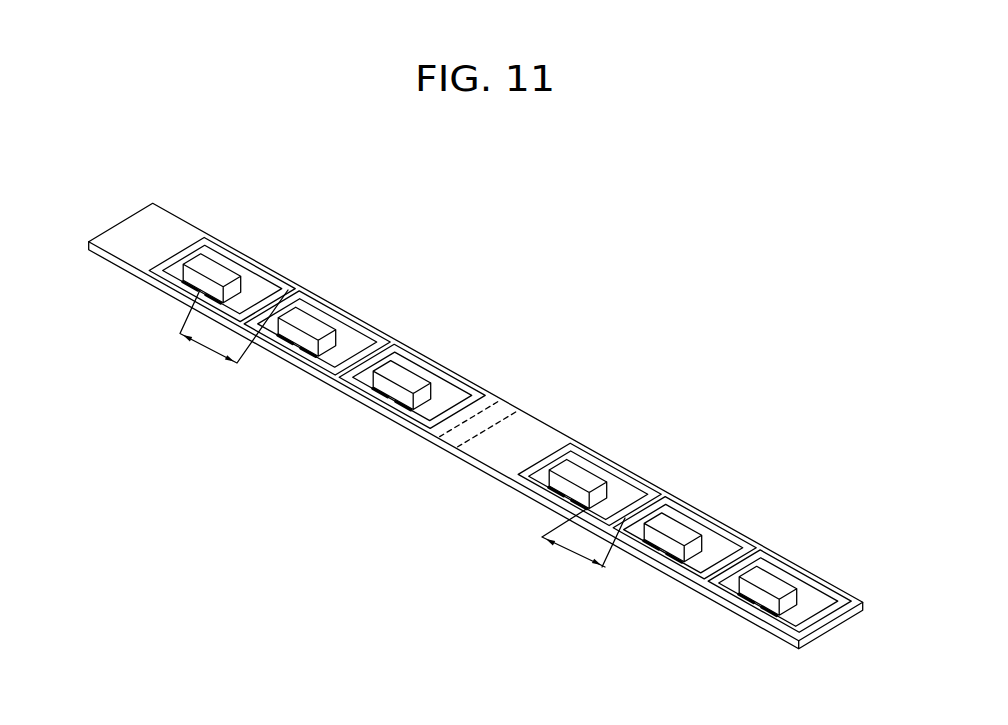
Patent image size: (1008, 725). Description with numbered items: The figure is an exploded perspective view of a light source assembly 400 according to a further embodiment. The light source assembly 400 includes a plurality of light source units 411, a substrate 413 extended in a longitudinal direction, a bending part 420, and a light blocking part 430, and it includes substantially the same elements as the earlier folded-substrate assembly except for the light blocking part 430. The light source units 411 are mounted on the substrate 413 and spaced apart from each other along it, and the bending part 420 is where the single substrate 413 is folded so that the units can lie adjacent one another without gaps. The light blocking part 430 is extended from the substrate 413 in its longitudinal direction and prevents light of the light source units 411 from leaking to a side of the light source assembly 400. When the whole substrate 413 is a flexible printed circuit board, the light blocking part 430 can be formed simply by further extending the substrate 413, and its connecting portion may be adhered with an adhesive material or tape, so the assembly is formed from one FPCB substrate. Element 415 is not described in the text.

The light source assembly 400 is at (563, 265).
The light blocking part 430 is at (170, 221).
The electrode pad / frame 415 is at (267, 281).
The light source units 411 is at (197, 283).
The substrate 413 is at (640, 482).
The bending part 420 is at (502, 412).